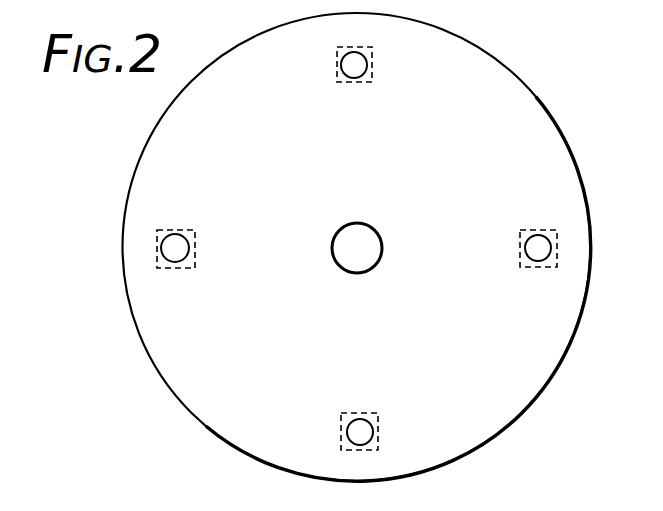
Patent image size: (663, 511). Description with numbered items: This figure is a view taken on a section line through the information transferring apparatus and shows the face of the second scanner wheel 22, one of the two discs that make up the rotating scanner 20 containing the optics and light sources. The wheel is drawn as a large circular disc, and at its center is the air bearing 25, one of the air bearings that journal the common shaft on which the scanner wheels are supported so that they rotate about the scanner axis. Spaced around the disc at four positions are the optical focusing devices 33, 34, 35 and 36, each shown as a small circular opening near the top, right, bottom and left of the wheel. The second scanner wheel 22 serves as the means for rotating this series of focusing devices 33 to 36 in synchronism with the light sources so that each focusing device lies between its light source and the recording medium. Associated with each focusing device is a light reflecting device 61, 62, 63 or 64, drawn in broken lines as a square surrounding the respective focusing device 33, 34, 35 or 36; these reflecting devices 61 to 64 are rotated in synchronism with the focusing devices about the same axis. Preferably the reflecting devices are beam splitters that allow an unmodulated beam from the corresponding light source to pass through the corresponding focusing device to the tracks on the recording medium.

The rotating scanner 20 is at (120, 198).
The second scanner wheel 22 is at (551, 114).
The air bearing 25 is at (368, 237).
The optical focusing device 33 is at (367, 66).
The optical focusing device 34 is at (527, 248).
The optical focusing device 35 is at (347, 432).
The optical focusing device 36 is at (180, 246).
The light reflecting device 61 is at (337, 83).
The light reflecting device 62 is at (532, 230).
The light reflecting device 63 is at (378, 414).
The light reflecting device 64 is at (191, 268).